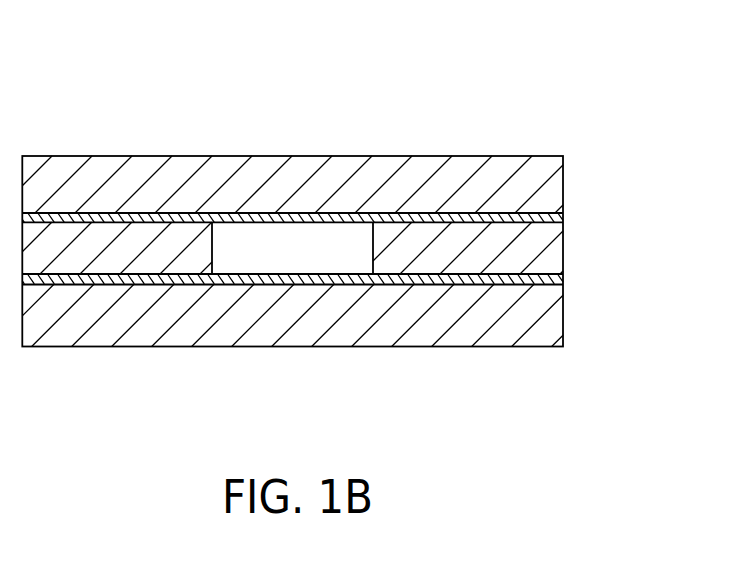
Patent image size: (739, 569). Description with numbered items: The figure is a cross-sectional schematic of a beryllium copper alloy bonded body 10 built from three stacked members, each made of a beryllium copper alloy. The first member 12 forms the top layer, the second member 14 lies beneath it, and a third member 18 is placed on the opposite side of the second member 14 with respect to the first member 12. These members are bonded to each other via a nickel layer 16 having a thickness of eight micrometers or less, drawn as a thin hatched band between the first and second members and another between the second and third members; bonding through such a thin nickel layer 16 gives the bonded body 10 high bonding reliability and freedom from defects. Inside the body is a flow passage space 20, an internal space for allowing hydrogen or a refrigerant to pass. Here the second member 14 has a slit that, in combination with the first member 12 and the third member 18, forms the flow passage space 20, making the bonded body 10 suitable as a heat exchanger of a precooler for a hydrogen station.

The beryllium copper alloy bonded body 10 is at (558, 104).
The first member 12 is at (553, 188).
The second member 14 is at (553, 257).
The nickel layer 16 is at (562, 218).
The third member 18 is at (553, 322).
The flow passage space 20 is at (335, 266).